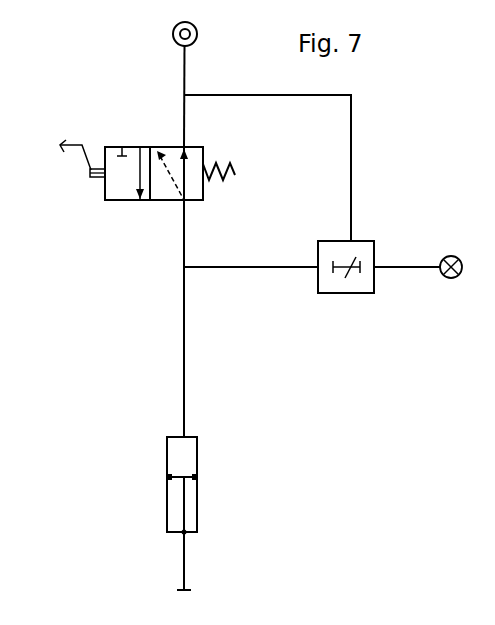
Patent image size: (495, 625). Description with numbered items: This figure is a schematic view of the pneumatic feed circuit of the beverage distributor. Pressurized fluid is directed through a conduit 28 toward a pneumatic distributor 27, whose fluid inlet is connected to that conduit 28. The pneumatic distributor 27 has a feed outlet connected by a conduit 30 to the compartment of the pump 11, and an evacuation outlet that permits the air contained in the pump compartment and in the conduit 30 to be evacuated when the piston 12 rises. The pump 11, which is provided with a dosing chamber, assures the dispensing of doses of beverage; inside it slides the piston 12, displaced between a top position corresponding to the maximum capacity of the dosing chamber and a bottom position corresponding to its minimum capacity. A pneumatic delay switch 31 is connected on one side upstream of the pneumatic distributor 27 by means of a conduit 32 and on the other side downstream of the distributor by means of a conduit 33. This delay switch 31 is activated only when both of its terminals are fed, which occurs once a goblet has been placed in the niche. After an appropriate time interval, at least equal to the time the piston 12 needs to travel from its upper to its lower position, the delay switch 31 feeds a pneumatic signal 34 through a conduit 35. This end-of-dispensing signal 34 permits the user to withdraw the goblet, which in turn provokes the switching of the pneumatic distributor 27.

The conduit 28 is at (183, 66).
The conduit 32 is at (281, 96).
The pneumatic distributor 27 is at (128, 195).
The conduit 33 is at (268, 268).
The pneumatic delay switch 31 is at (350, 289).
The conduit 35 is at (413, 265).
The pneumatic signal 34 is at (445, 282).
The conduit 30 is at (184, 393).
The pump 11 is at (198, 450).
The piston 12 is at (185, 495).